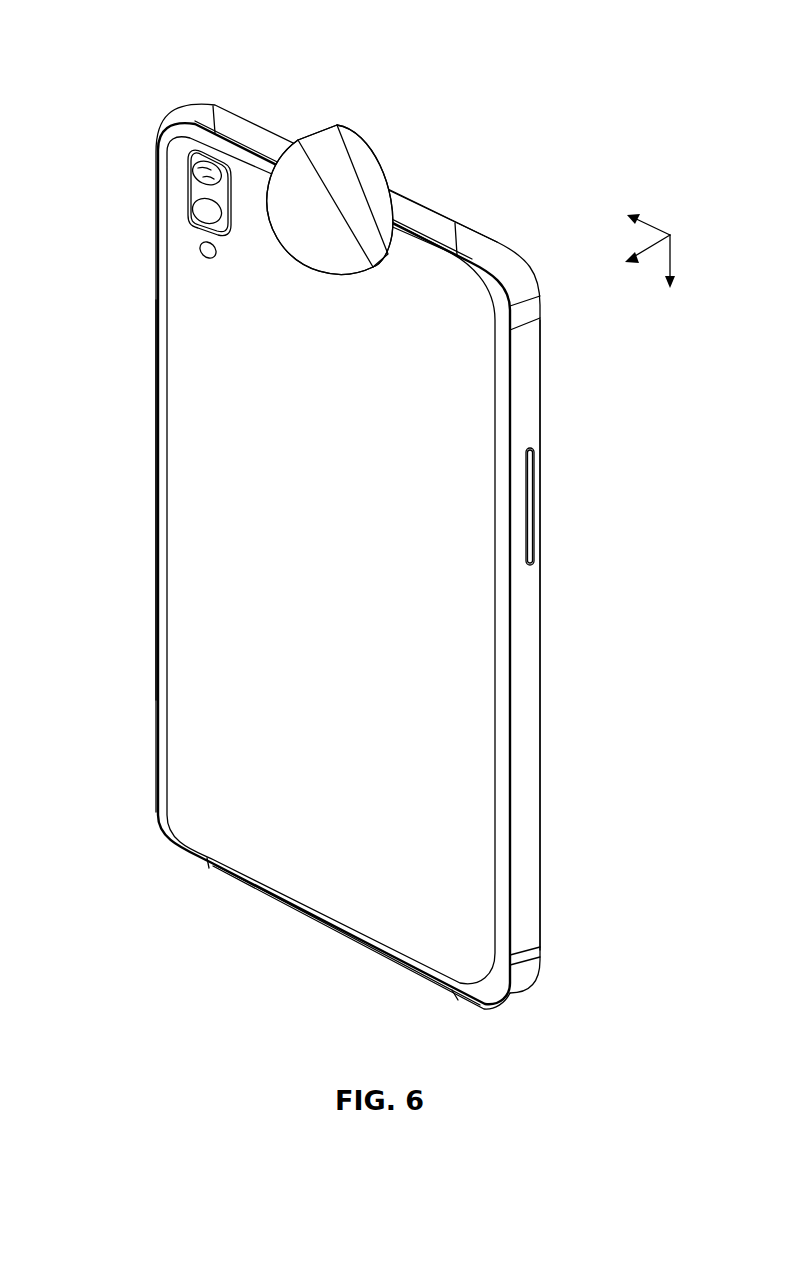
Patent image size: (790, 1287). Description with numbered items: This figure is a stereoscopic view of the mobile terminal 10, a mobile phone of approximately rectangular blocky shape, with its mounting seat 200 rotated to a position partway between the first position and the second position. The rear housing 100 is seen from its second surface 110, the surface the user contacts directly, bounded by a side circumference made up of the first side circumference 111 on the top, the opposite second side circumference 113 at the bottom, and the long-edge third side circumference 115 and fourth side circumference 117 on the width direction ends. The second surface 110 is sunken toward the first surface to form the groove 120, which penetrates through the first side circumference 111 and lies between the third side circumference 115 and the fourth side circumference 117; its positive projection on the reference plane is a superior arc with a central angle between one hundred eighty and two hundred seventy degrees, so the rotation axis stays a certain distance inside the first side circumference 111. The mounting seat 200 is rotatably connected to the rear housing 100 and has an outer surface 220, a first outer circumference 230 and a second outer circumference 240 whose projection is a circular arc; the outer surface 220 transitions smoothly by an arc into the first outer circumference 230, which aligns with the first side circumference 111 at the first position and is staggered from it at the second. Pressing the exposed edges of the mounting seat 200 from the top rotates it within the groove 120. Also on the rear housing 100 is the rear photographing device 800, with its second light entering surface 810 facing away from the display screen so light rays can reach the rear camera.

The mobile terminal 10 is at (157, 66).
The rear housing 100 is at (193, 370).
The second surface 110 is at (172, 478).
The first side circumference 111 is at (447, 227).
The second side circumference 113 is at (228, 878).
The third side circumference 115 is at (530, 623).
The fourth side circumference 117 is at (157, 546).
The groove 120 is at (390, 217).
The mounting seat 200 is at (350, 170).
The outer surface 220 is at (283, 183).
The first outer circumference 230 is at (330, 145).
The second outer circumference 240 is at (322, 122).
The rear photographing device 800 is at (186, 157).
The second light entering surface 810 is at (216, 175).